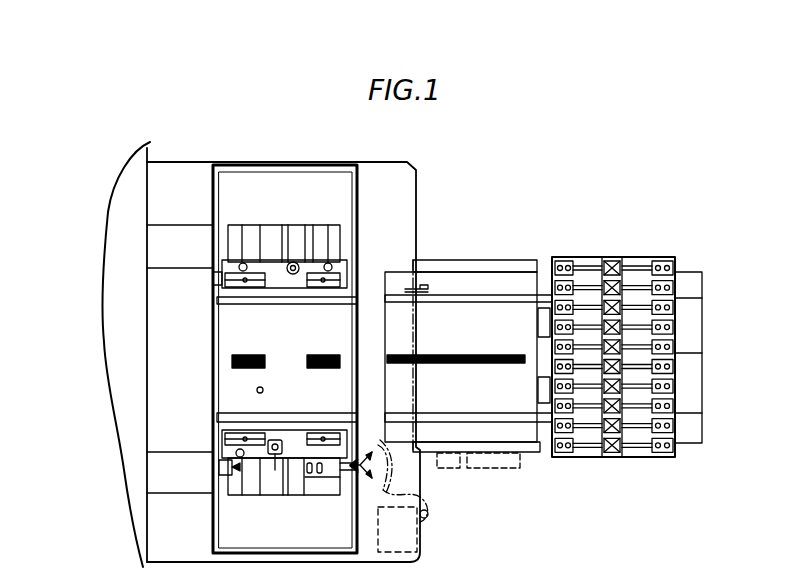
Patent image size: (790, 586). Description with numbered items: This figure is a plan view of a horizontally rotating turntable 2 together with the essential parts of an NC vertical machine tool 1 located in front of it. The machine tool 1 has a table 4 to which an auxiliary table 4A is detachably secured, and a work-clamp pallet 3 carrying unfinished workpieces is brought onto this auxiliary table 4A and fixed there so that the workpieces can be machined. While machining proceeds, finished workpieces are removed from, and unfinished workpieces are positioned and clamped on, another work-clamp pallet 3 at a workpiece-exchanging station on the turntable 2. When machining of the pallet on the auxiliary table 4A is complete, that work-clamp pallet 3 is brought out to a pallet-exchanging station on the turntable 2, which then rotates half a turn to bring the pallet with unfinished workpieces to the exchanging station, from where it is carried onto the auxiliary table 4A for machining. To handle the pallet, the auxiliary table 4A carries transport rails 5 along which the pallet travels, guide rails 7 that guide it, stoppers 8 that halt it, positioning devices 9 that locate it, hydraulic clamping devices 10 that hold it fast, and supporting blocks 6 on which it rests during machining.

The NC vertical machine tool 1 is at (120, 232).
The turntable 2 is at (485, 282).
The work-clamp pallet 3 is at (436, 259).
The table 4 is at (297, 252).
The auxiliary table 4A is at (313, 255).
The transport rails 5 is at (237, 302).
The supporting blocks 6 is at (312, 432).
The guide rails 7 is at (240, 353).
The stoppers 8 is at (215, 282).
The positioning devices 9 is at (294, 258).
The hydraulic clamping devices 10 is at (306, 354).